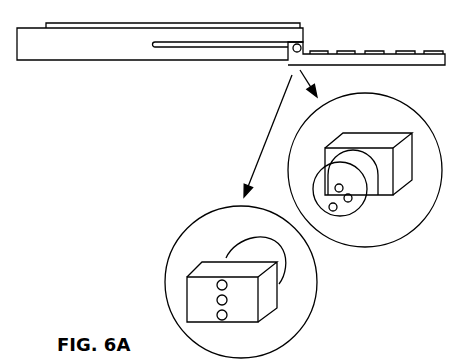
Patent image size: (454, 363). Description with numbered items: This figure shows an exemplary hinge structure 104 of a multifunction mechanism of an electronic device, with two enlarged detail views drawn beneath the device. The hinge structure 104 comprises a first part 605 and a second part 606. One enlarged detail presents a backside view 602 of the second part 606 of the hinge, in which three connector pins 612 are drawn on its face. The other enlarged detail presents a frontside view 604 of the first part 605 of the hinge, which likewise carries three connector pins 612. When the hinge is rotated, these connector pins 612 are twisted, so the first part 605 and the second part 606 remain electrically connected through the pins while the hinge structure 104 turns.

The hinge structure 104 is at (222, 158).
The backside view 602 is at (213, 270).
The frontside view 604 is at (350, 218).
The first part 605 is at (294, 217).
The second part 606 is at (337, 222).
The connector pins 612 is at (311, 269).